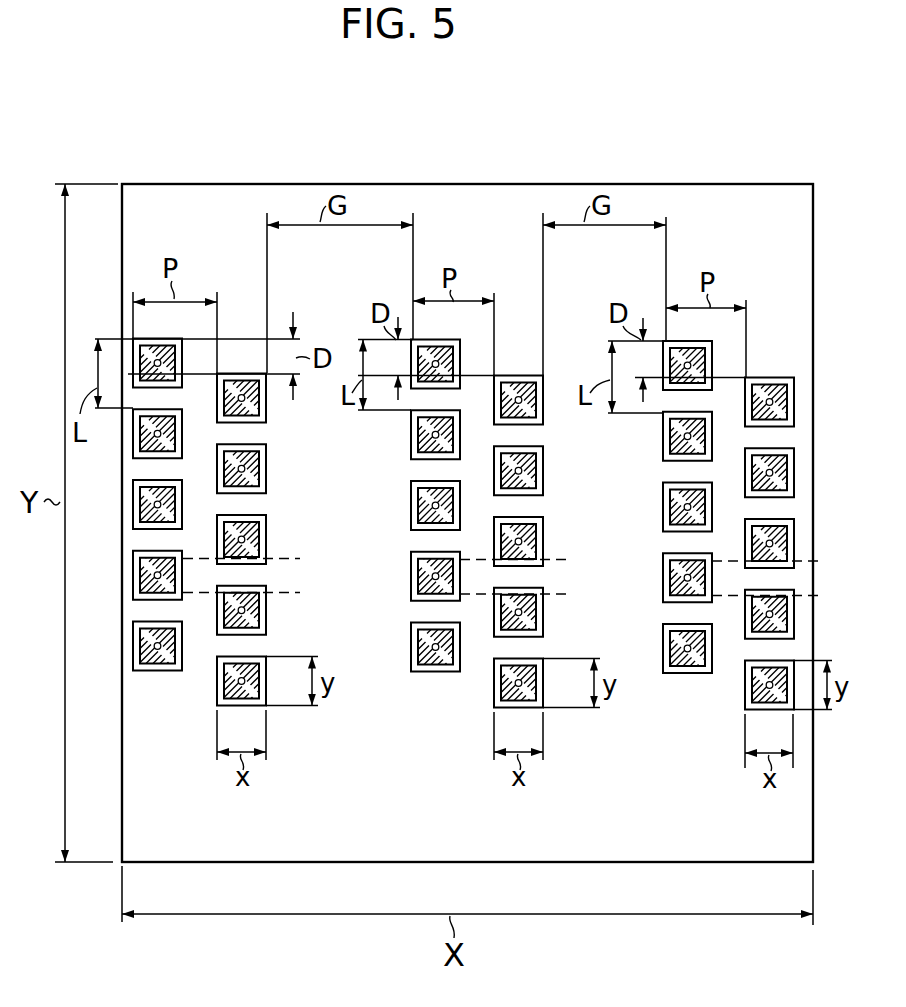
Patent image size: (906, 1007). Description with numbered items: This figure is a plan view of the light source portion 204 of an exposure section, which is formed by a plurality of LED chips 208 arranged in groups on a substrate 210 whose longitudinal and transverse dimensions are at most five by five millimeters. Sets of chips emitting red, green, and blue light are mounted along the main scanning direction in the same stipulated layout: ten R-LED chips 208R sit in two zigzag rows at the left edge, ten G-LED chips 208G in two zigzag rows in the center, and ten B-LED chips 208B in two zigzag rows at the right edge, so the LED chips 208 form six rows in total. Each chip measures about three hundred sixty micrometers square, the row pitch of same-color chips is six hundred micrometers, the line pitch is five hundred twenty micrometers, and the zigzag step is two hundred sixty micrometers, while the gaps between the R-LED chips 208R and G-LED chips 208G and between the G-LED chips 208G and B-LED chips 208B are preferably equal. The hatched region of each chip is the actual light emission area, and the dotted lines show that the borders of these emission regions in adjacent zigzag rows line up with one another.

The light source portion 204 is at (240, 158).
The substrate 210 is at (557, 200).
The LED chips 208 is at (462, 596).
The R-LED chip 208R is at (267, 493).
The G-LED chip 208G is at (412, 600).
The B-LED chip 208B is at (699, 573).